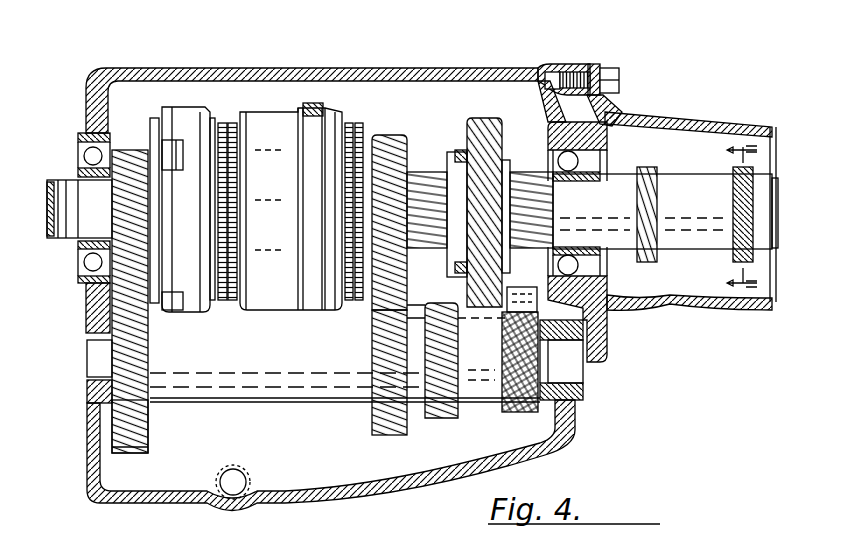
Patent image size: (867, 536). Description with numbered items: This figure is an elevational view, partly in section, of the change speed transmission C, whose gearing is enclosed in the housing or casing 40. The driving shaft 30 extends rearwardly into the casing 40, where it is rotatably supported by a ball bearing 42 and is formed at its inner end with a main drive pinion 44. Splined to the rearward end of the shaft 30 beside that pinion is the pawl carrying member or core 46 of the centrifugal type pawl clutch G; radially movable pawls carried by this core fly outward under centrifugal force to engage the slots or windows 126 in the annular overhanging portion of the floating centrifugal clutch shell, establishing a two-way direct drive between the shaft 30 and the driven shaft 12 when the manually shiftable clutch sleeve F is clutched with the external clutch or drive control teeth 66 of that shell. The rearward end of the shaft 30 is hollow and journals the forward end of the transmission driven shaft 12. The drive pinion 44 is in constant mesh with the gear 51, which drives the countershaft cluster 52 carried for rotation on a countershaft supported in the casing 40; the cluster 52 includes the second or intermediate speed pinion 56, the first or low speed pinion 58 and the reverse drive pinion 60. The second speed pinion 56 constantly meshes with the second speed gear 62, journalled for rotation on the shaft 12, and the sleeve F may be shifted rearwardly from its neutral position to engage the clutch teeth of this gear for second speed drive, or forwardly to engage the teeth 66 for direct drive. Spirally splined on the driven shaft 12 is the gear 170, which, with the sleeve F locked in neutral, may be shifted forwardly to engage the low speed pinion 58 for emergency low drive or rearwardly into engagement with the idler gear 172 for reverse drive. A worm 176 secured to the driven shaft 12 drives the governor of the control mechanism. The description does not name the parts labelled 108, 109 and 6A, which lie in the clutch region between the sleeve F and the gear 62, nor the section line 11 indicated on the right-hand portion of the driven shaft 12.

The housing or casing 40 is at (97, 468).
The transmission C is at (95, 393).
The shaft 30 is at (86, 183).
The ball bearing 42 is at (83, 270).
The main drive pinion 44 is at (148, 150).
The gear 51 is at (148, 436).
The pawl carrying member or core 46 is at (154, 118).
The centrifugal type pawl clutch G is at (180, 107).
The slots or windows 126 is at (172, 170).
The external clutch or drive control teeth 66 is at (222, 123).
The clutch plates 109 is at (233, 123).
The clutch sleeve F is at (265, 112).
The clutch plates 108 is at (349, 123).
The clutch plates 6A is at (360, 123).
The second speed gear 62 is at (390, 136).
The second or intermediate speed pinion 56 is at (375, 430).
The idler gear 172 is at (600, 274).
The gear 170 is at (499, 100).
The transmission driven shaft 12 is at (700, 209).
The worm 176 is at (724, 260).
The section line 11- 11 is at (720, 235).
The countershaft cluster 52 is at (305, 361).
The first or low speed pinion 58 is at (447, 418).
The reverse drive pinion 60 is at (525, 412).